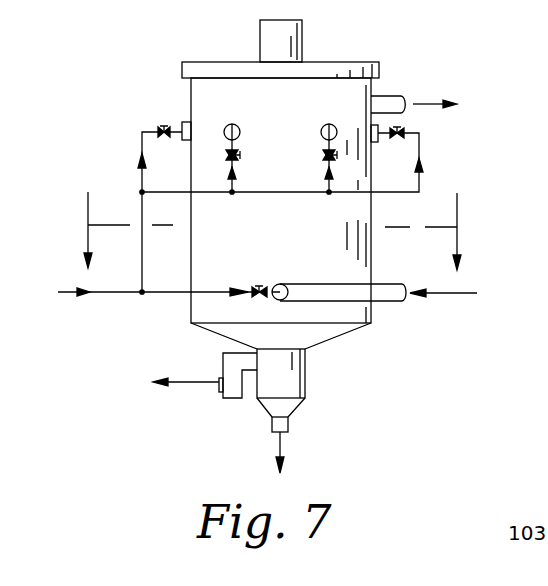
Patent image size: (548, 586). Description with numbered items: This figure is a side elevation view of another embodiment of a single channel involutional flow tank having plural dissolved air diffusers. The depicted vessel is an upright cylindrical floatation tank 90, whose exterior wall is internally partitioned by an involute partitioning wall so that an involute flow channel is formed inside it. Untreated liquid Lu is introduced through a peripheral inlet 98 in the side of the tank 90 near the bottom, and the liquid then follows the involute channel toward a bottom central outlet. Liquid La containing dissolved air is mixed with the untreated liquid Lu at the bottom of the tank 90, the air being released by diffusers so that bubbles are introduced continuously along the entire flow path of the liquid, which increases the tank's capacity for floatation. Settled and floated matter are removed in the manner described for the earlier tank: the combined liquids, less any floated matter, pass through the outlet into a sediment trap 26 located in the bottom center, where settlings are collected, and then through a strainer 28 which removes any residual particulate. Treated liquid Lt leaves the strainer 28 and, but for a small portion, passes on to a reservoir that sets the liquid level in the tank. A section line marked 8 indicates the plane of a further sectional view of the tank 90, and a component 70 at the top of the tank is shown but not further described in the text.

The top inlet block 70 is at (262, 37).
The upright cylindrical floatation tank 90 is at (386, 208).
The peripheral inlet 98 is at (378, 297).
The sediment trap 26 is at (305, 370).
The strainer 28 is at (227, 392).
The section line 8- 8 is at (272, 235).
The liquid containing dissolved air La is at (113, 292).
The untreated liquid Lu is at (463, 293).
The treated liquid Lt is at (185, 385).